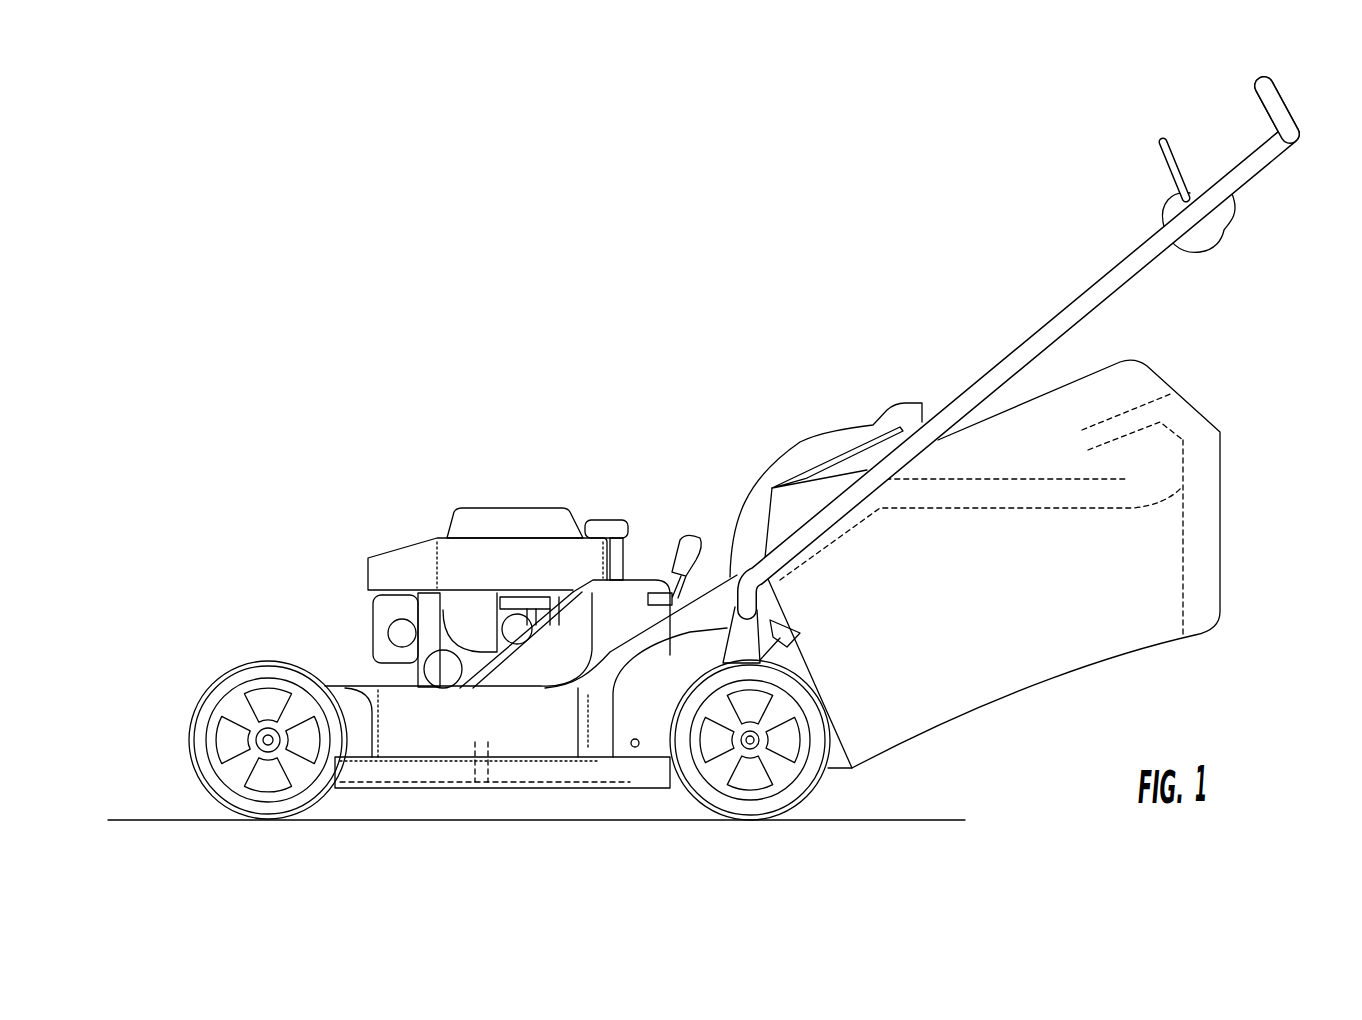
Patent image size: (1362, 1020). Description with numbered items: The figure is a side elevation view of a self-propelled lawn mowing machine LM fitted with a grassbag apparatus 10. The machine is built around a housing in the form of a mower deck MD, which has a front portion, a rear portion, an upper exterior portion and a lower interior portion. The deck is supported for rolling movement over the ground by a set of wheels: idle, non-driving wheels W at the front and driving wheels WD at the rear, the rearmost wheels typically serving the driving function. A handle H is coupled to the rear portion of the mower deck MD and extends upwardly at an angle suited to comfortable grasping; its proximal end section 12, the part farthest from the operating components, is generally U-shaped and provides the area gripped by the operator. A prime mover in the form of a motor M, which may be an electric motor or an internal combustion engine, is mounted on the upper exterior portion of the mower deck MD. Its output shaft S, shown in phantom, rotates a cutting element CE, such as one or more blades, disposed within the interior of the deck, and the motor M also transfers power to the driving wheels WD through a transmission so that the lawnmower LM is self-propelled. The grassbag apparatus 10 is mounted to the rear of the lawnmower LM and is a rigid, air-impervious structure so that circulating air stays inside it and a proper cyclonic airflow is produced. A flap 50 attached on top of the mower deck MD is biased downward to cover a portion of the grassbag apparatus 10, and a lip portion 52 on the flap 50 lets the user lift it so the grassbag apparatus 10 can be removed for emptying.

The grassbag apparatus 10 is at (1250, 430).
The proximal end section 12 is at (1232, 122).
The handle H is at (1295, 93).
The flap 50 is at (817, 450).
The lip portion 52 is at (923, 403).
The lawn mowing machine LM is at (723, 466).
The motor M is at (490, 527).
The mower deck MD is at (380, 710).
The wheels W is at (215, 695).
The driving wheels WD is at (803, 787).
The cutting element CE is at (393, 793).
The output shaft S is at (488, 782).